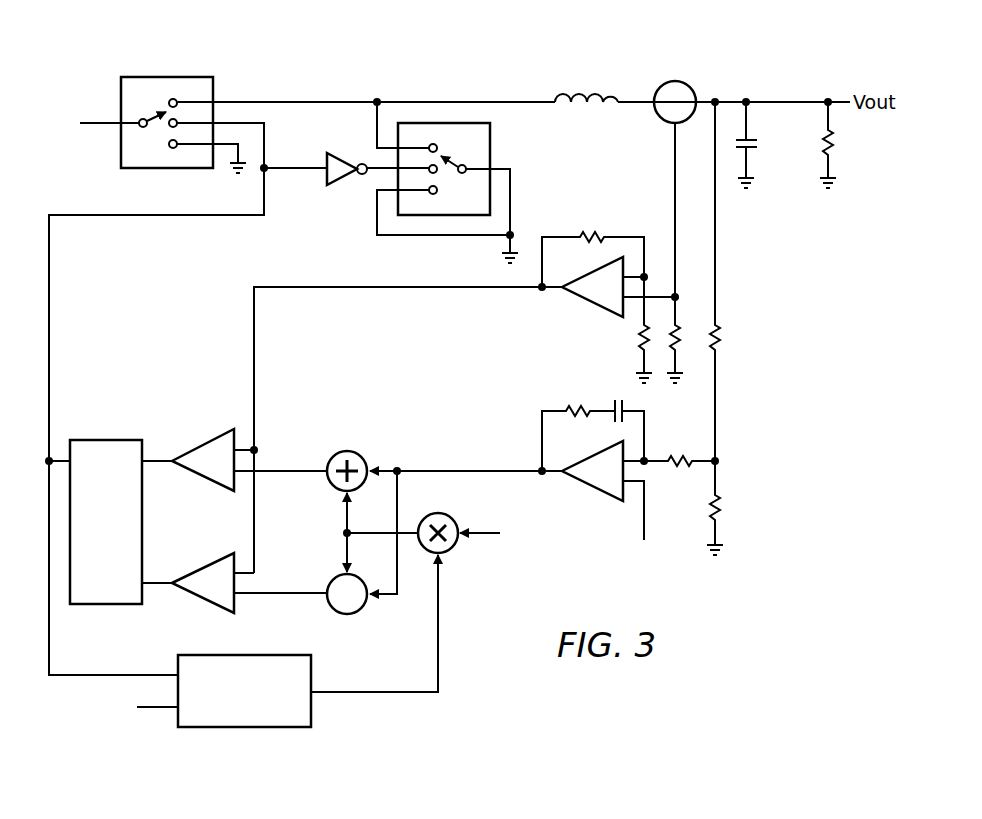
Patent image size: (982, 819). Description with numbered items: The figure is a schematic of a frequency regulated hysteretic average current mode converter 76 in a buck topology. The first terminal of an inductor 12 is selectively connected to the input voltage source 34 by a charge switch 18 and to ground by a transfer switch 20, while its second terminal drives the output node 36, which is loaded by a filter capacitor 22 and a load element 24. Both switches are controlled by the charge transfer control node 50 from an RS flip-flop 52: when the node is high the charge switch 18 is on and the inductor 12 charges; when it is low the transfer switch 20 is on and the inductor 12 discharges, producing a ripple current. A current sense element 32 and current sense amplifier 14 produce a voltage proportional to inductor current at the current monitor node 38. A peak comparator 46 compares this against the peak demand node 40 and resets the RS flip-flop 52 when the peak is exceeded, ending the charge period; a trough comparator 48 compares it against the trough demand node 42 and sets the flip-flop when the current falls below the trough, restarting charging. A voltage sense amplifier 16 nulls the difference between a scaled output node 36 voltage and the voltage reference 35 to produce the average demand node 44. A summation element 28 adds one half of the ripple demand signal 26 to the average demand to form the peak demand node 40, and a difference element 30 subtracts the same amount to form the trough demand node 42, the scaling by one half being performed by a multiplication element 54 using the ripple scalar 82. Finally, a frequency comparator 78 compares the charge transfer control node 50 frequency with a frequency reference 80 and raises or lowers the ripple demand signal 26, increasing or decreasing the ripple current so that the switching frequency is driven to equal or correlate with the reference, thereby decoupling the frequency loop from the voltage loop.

The inductor 12 is at (596, 87).
The current sense amplifier 14 is at (592, 306).
The voltage sense amplifier 16 is at (592, 490).
The charge switch 18 is at (160, 77).
The transfer switch 20 is at (490, 150).
The filter capacitor 22 is at (758, 143).
The load element 24 is at (834, 146).
The ripple demand signal 26 is at (438, 637).
The summation element 28 is at (351, 452).
The difference element 30 is at (362, 610).
The current sense element 32 is at (688, 87).
The input voltage source 34 is at (100, 123).
The voltage reference 35 is at (644, 510).
The output node 36 is at (787, 102).
The current monitor node 38 is at (306, 285).
The peak demand node 40 is at (297, 476).
The trough demand node 42 is at (288, 598).
The average demand node 44 is at (427, 469).
The peak comparator 46 is at (200, 443).
The trough comparator 48 is at (200, 566).
The charge transfer control node 50 is at (150, 215).
The RS flip-flop 52 is at (105, 440).
The multiplication element 54 is at (452, 550).
The frequency regulated hysteretic average current mode converter 76 is at (810, 453).
The frequency comparator 78 is at (243, 728).
The frequency reference 80 is at (160, 708).
The ripple scalar 82 is at (487, 532).